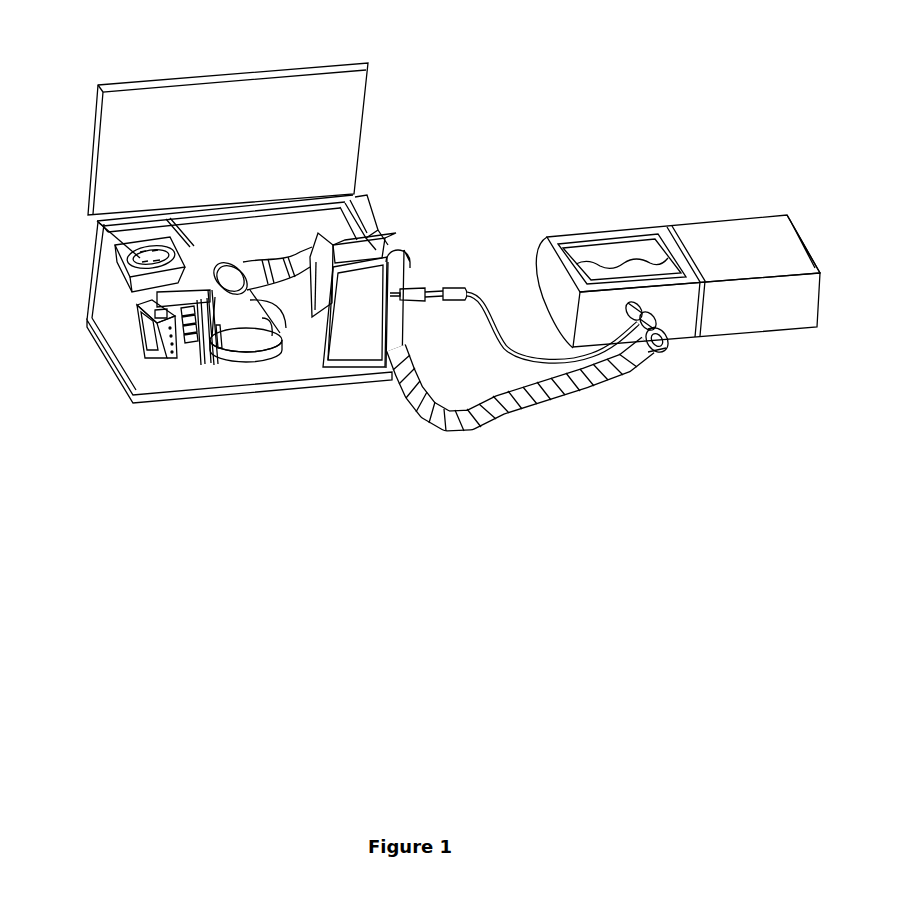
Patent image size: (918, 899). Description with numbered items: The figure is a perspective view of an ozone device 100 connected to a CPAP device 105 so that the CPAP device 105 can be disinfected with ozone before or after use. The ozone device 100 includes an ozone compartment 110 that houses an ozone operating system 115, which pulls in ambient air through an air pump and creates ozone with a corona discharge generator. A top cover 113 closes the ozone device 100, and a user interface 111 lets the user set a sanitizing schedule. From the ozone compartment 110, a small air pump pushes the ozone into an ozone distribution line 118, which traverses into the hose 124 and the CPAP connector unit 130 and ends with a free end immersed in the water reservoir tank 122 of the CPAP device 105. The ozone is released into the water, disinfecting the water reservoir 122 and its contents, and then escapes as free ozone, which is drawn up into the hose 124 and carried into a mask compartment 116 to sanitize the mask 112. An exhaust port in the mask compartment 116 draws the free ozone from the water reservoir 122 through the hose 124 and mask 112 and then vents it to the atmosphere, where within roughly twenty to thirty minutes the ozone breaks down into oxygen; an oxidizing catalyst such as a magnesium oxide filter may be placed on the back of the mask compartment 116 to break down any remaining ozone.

The ozone device 100 is at (200, 412).
The CPAP device 105 is at (737, 308).
The ozone compartment 110 is at (163, 372).
The user interface 111 is at (113, 248).
The mask 112 is at (242, 352).
The top cover 113 is at (140, 120).
The ozone operating system 115 is at (131, 333).
The mask compartment 116 is at (302, 352).
The ozone distribution line 118 is at (462, 292).
The water reservoir tank 122 is at (618, 279).
The hose 124 is at (487, 405).
The CPAP connector unit 130 is at (648, 325).